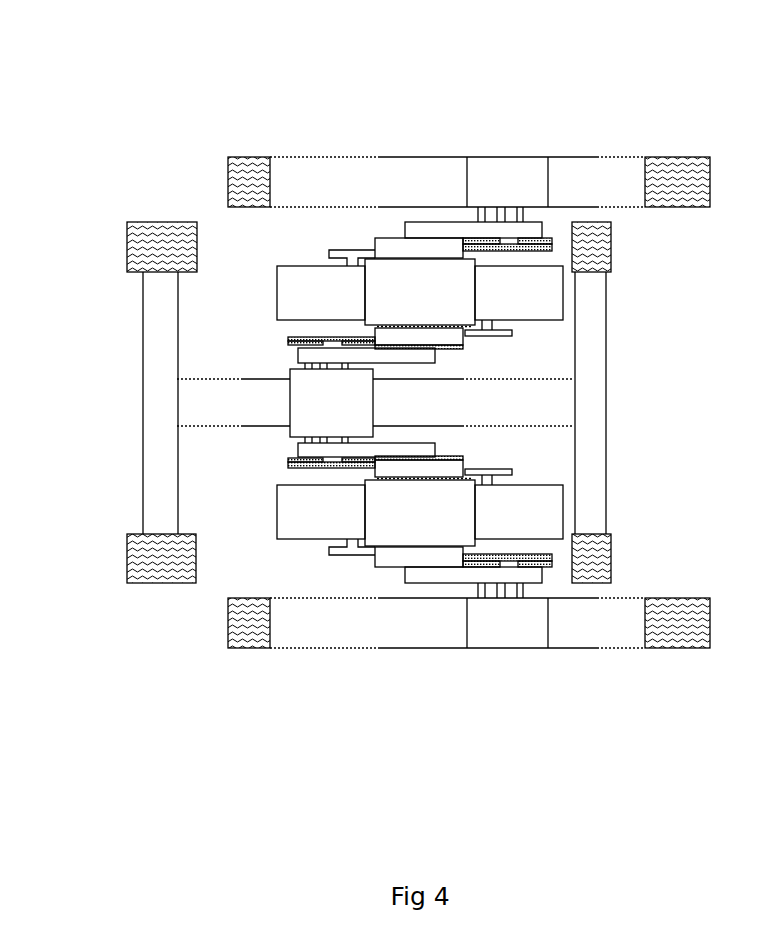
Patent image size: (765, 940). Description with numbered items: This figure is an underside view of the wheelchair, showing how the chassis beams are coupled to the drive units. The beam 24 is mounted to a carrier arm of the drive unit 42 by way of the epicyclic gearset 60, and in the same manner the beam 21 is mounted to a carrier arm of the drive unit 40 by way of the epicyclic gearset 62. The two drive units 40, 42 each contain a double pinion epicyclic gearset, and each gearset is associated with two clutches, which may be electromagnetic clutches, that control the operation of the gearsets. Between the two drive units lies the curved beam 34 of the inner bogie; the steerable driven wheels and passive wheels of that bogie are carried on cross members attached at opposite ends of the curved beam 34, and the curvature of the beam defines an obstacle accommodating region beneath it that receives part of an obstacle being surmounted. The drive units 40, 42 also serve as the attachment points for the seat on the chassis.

The beam 21 is at (373, 640).
The beam 24 is at (397, 160).
The curved beam 34 is at (244, 395).
The drive unit 40 is at (520, 480).
The drive unit 42 is at (458, 282).
The epicyclic gearset 60 is at (503, 160).
The epicyclic gearset 62 is at (530, 632).